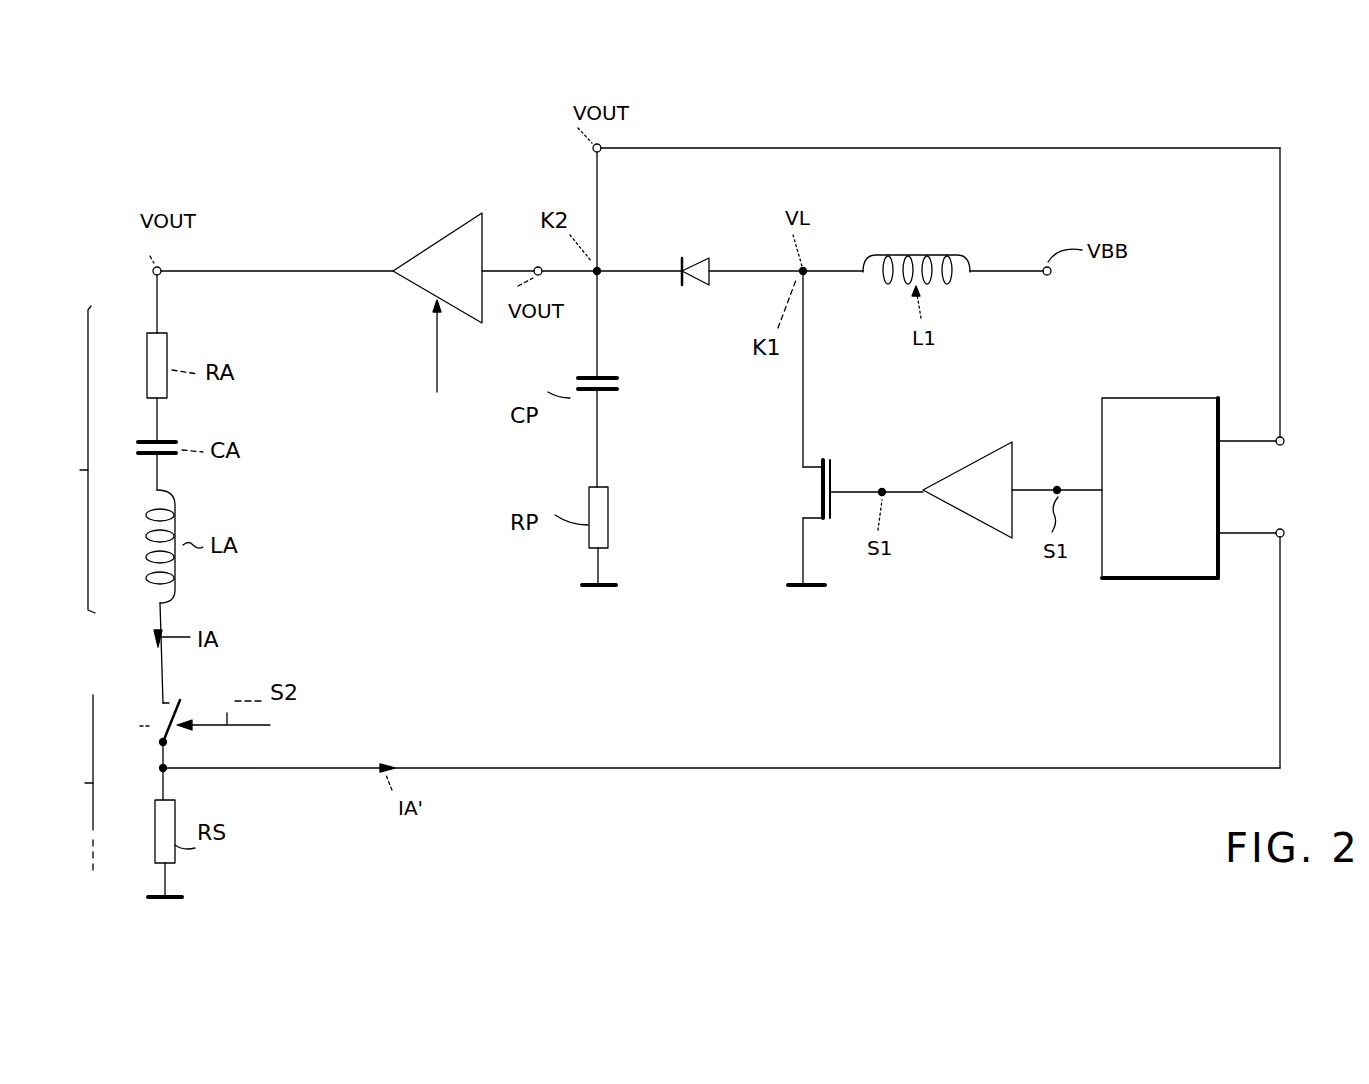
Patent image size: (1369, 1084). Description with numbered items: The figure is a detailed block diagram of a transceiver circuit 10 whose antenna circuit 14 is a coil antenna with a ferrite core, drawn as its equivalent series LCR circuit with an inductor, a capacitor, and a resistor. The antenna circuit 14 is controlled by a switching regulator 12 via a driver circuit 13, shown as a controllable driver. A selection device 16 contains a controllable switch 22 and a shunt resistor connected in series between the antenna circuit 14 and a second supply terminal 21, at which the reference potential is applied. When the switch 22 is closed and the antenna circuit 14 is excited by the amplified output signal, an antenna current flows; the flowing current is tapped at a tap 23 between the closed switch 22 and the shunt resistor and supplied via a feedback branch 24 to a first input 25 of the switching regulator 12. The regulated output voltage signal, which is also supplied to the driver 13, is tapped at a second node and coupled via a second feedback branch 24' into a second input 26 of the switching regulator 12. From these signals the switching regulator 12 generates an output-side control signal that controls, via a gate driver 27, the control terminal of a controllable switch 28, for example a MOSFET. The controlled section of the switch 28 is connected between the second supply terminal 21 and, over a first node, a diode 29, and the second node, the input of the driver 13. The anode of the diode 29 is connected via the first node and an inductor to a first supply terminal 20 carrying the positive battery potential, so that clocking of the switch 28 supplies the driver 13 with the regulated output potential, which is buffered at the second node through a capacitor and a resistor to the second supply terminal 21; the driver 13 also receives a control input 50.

The transceiver circuit 10 is at (188, 128).
The switching regulator 12 is at (1158, 582).
The driver circuit 13 is at (432, 240).
The antenna circuit 14 is at (67, 459).
The selection device 16 is at (70, 782).
The first supply terminal 20 is at (1058, 274).
The second supply terminal 21 is at (850, 633).
The controllable switch 22 is at (127, 743).
The tap 23 is at (152, 772).
The feedback branch 24 is at (721, 802).
The second feedback branch 24' is at (1060, 117).
The first input 25 is at (1286, 533).
The second input 26 is at (1286, 441).
The gate driver 27 is at (967, 525).
The controllable switch 28 is at (812, 493).
The diode 29 is at (694, 252).
The control input 50 is at (433, 322).